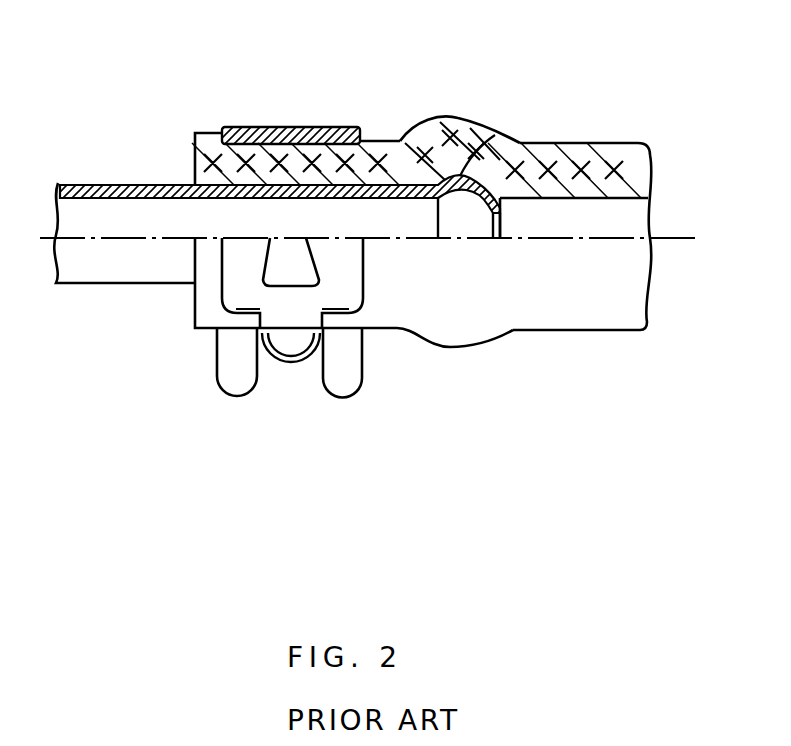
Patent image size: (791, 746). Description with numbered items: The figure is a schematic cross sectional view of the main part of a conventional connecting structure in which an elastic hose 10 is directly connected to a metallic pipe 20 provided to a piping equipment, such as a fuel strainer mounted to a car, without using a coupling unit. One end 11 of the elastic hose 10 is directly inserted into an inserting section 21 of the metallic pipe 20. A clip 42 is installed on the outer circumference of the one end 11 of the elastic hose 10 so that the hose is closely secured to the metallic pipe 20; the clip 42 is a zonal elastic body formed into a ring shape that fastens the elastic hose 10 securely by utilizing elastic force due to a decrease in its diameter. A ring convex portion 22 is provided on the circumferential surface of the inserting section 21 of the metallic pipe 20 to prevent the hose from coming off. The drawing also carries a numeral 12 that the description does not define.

The elastic hose 10 is at (633, 143).
The one end of the elastic hose 11 is at (246, 143).
The outer sheath of second cable 12 is at (621, 143).
The metallic pipe 20 is at (128, 178).
The inserting section 21 is at (397, 137).
The ring convex portion 22 is at (512, 137).
The clip 42 is at (331, 128).